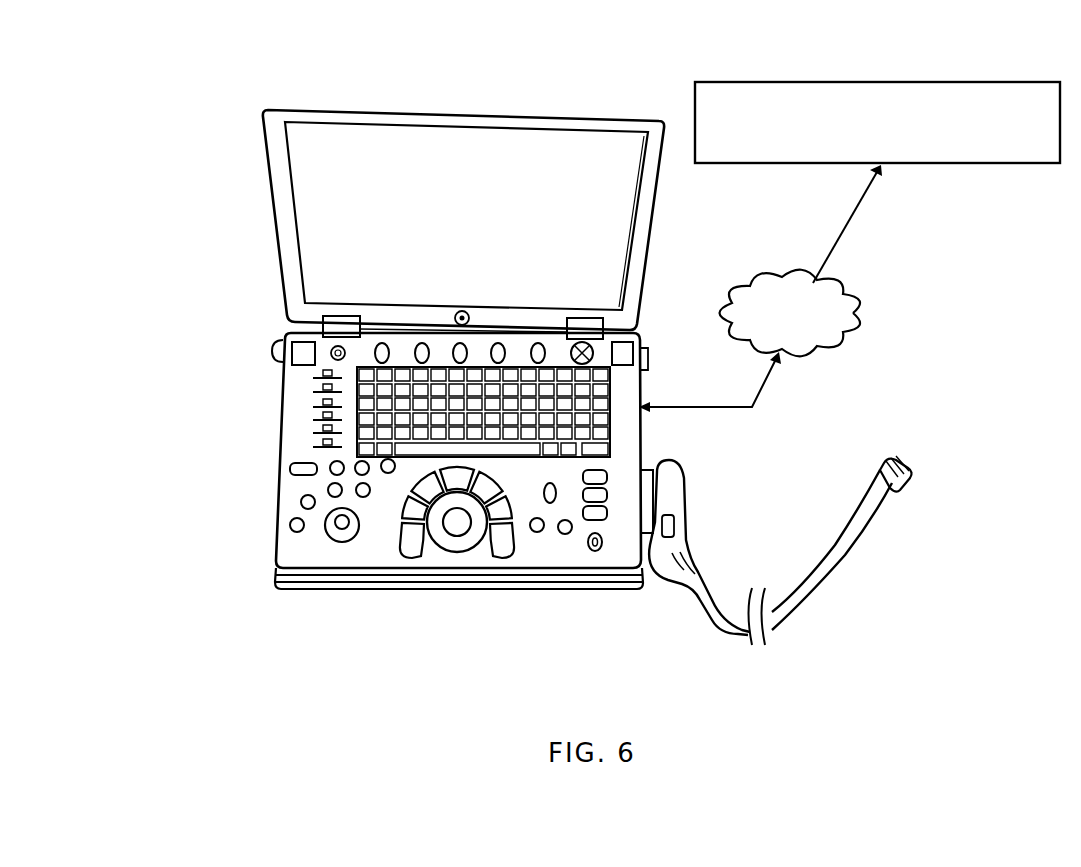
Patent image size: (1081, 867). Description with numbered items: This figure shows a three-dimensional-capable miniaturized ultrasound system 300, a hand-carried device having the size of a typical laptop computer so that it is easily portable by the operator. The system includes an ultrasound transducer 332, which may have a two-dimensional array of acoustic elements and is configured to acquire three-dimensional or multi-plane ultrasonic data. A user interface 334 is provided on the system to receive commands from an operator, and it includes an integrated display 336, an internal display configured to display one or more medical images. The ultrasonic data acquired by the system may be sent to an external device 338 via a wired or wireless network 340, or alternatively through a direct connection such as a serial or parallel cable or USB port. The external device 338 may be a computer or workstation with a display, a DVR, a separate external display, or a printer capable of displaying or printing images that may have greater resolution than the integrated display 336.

The 3D-capable miniaturized ultrasound system 300 is at (245, 76).
The ultrasound transducer 332 is at (772, 637).
The user interface 334 is at (255, 592).
The integrated display 336 is at (236, 113).
The external device 338 is at (911, 82).
The network 340 is at (766, 274).